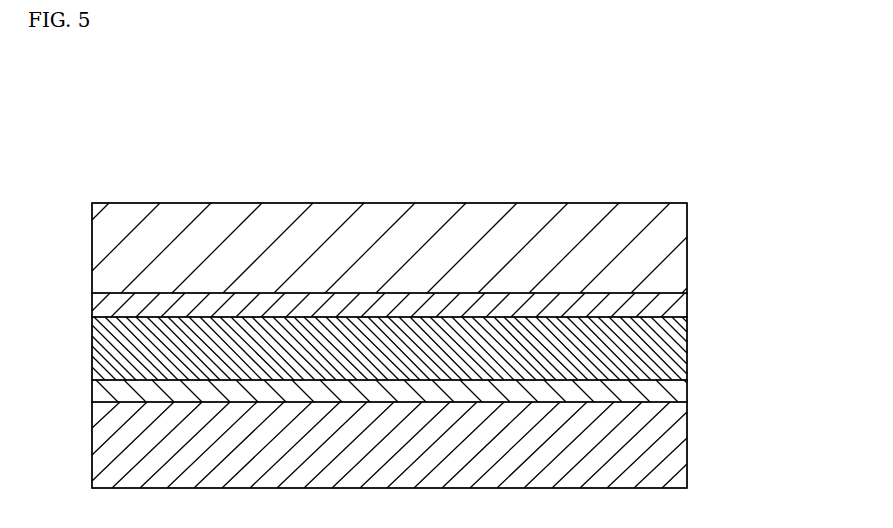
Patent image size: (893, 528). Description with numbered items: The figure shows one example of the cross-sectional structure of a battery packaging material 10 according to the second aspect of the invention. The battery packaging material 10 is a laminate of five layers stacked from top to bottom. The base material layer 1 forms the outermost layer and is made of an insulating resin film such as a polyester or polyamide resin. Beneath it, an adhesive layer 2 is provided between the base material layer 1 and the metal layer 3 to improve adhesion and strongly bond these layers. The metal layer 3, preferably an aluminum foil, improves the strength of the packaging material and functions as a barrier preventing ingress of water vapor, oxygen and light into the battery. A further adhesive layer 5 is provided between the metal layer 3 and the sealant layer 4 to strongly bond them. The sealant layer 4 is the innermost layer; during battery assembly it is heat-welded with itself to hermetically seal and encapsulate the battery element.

The battery packaging material 10 is at (412, 174).
The base material layer 1 is at (687, 247).
The adhesive layer 2 is at (687, 308).
The metal layer 3 is at (687, 358).
The adhesive layer 5 is at (687, 395).
The sealant layer 4 is at (687, 440).